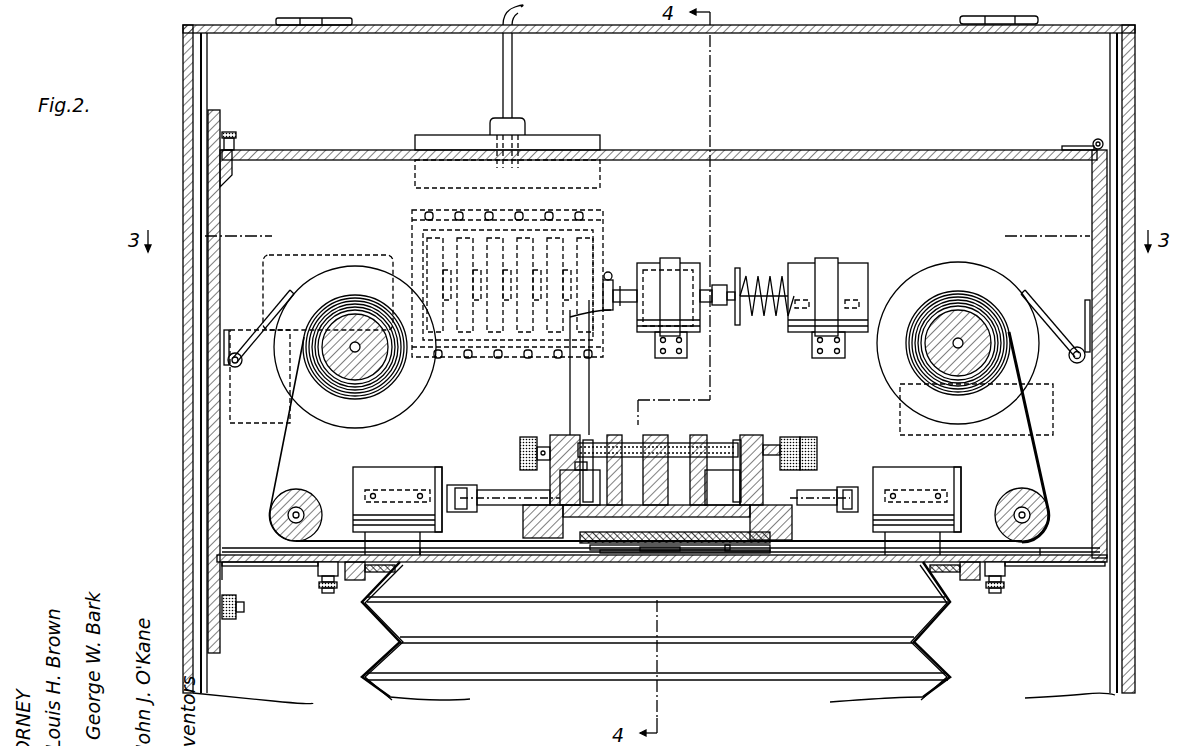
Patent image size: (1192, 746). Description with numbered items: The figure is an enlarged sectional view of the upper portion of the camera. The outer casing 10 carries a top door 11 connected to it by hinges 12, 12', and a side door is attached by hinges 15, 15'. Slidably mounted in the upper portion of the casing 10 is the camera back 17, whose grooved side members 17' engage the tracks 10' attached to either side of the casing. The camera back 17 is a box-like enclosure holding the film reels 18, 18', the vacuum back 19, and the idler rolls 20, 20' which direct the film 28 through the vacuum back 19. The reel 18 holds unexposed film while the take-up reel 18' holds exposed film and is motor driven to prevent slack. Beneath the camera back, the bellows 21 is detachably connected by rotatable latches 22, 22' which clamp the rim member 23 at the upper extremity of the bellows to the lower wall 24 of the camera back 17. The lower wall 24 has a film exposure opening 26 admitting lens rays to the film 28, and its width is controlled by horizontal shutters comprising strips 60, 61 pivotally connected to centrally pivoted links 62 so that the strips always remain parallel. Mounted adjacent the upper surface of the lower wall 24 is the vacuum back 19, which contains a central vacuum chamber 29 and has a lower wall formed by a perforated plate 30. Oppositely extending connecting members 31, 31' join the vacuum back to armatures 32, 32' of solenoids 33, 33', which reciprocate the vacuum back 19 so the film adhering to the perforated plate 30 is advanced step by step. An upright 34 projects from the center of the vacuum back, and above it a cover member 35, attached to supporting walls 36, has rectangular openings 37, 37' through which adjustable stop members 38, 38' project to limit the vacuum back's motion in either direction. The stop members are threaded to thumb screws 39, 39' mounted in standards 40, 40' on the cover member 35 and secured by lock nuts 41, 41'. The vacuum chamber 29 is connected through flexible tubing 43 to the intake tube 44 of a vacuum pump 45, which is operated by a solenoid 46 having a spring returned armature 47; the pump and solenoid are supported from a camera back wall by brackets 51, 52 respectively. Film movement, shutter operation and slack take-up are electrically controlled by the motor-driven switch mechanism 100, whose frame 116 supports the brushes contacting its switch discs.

The outer casing 10 is at (629, 364).
The tracks 10' is at (661, 359).
The top door 11 is at (902, 33).
The hinges 12 is at (317, 41).
The latch 12' is at (981, 36).
The hinges 15 is at (259, 320).
The tension arm 15' is at (1055, 317).
The camera back 17 is at (662, 96).
The grooved side members 17' is at (659, 381).
The film reel 18 is at (333, 398).
The take-up reel 18' is at (674, 393).
The vacuum back 19 is at (522, 522).
The idler roll 20 is at (298, 502).
The idler roll 20' is at (1039, 508).
The bellows 21 is at (942, 675).
The rotatable latch 22 is at (315, 589).
The rotatable latch 22' is at (1019, 585).
The rim member 23 is at (355, 578).
The lower wall 24 is at (279, 562).
The film exposure opening 26 is at (678, 556).
The film 28 is at (414, 552).
The vacuum chamber 29 is at (546, 554).
The perforated plate 30 is at (772, 548).
The connecting member 31 is at (510, 482).
The connecting member 31' is at (820, 483).
The armature 32 is at (461, 478).
The armature 32' is at (859, 474).
The solenoid 33 is at (397, 496).
The solenoid 33' is at (917, 497).
The upright 34 is at (647, 548).
The cover member 35 is at (530, 474).
The supporting wall 36 is at (658, 450).
The rectangular opening 37 is at (616, 451).
The rectangular opening 37' is at (746, 448).
The adjustable stop member 38 is at (657, 451).
The adjustable stop member 38' is at (706, 451).
The thumb screw 39 is at (521, 435).
The thumb screw 39' is at (823, 442).
The standard 40 is at (554, 452).
The standard 40' is at (788, 434).
The lock nut 41 is at (598, 440).
The lock nut 41' is at (765, 438).
The flexible tubing 43 is at (570, 380).
The intake tube 44 is at (626, 289).
The vacuum pump 45 is at (690, 268).
The solenoid 46 is at (858, 282).
The spring returned armature 47 is at (760, 275).
The bracket 51 is at (670, 355).
The bracket 52 is at (846, 356).
The shutter strip 60 is at (612, 548).
The shutter strip 61 is at (736, 550).
The link 62 is at (663, 550).
The motor-driven switch mechanism 100 is at (568, 238).
The frame 116 is at (412, 215).